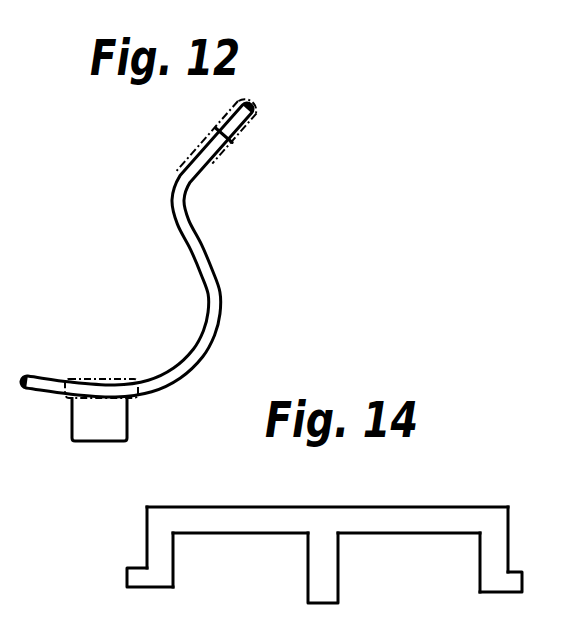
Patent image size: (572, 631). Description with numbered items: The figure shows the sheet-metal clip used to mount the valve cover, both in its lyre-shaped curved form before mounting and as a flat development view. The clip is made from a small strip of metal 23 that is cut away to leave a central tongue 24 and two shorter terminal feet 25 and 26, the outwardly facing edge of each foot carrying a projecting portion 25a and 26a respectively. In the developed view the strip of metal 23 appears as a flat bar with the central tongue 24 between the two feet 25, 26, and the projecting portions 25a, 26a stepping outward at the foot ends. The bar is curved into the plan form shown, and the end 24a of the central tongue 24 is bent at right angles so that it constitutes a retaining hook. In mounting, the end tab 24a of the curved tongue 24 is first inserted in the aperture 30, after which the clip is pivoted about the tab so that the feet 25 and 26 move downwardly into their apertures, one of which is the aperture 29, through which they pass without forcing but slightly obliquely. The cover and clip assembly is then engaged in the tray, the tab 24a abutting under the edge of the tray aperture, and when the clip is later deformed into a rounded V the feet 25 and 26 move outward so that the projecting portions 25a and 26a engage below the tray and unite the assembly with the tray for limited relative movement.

In FIG. 12, the strip of metal 23 is at (221, 313).
In FIG. 14, the strip of metal 23 is at (438, 520).
In FIG. 14, the central tongue 24 is at (328, 570).
In FIG. 12, the end of the central tongue 24a is at (115, 427).
In FIG. 14, the terminal foot 25 is at (160, 565).
In FIG. 14, the projecting portion 25a is at (132, 575).
In FIG. 12, the terminal foot 26 is at (221, 143).
In FIG. 14, the terminal foot 26 is at (492, 545).
In FIG. 12, the projecting portion 26a is at (253, 117).
In FIG. 14, the projecting portion 26a is at (517, 572).
In FIG. 12, the aperture 29 is at (197, 141).
In FIG. 12, the aperture 30 is at (77, 377).